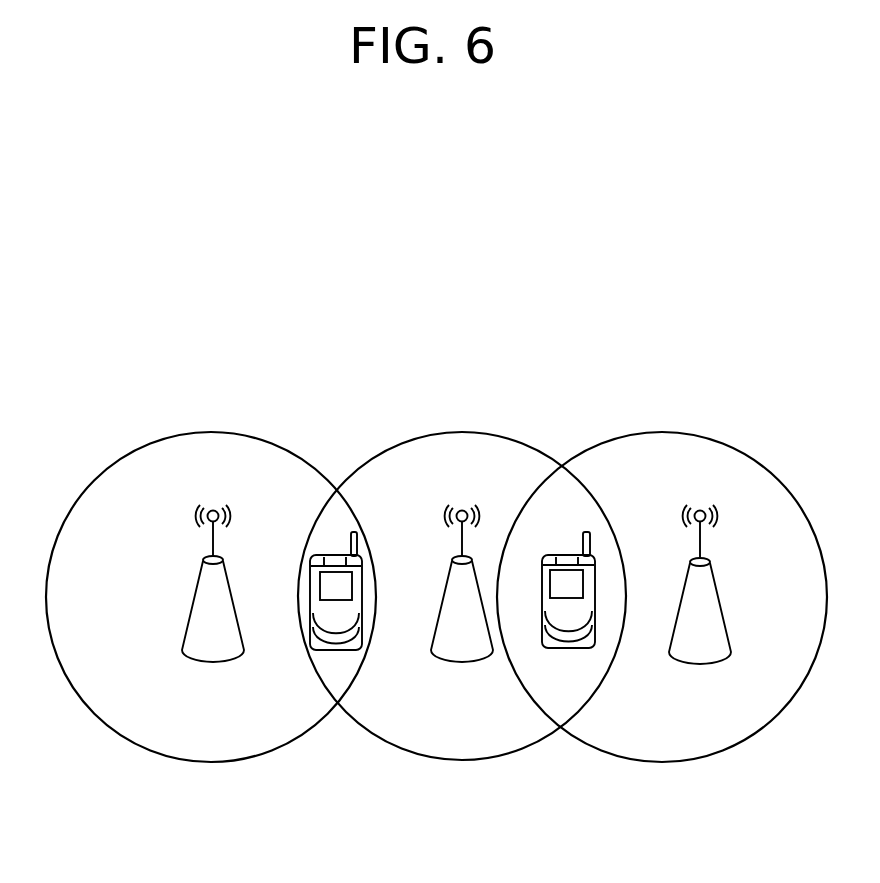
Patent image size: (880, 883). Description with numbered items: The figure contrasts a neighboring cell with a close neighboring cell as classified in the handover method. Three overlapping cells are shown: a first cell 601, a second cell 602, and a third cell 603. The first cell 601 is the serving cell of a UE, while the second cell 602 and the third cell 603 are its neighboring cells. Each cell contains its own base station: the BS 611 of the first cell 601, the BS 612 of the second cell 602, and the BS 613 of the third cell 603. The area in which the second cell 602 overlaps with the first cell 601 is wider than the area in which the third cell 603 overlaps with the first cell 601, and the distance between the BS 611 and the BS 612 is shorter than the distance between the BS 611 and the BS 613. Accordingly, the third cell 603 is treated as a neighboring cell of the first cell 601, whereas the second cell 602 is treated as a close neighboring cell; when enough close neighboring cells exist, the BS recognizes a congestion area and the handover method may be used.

The cell 1 601 is at (463, 432).
The cell 2 602 is at (662, 432).
The cell 3 603 is at (214, 432).
The BS of cell 1 611 is at (438, 662).
The BS of cell 2 612 is at (677, 662).
The BS of cell 3 613 is at (187, 660).